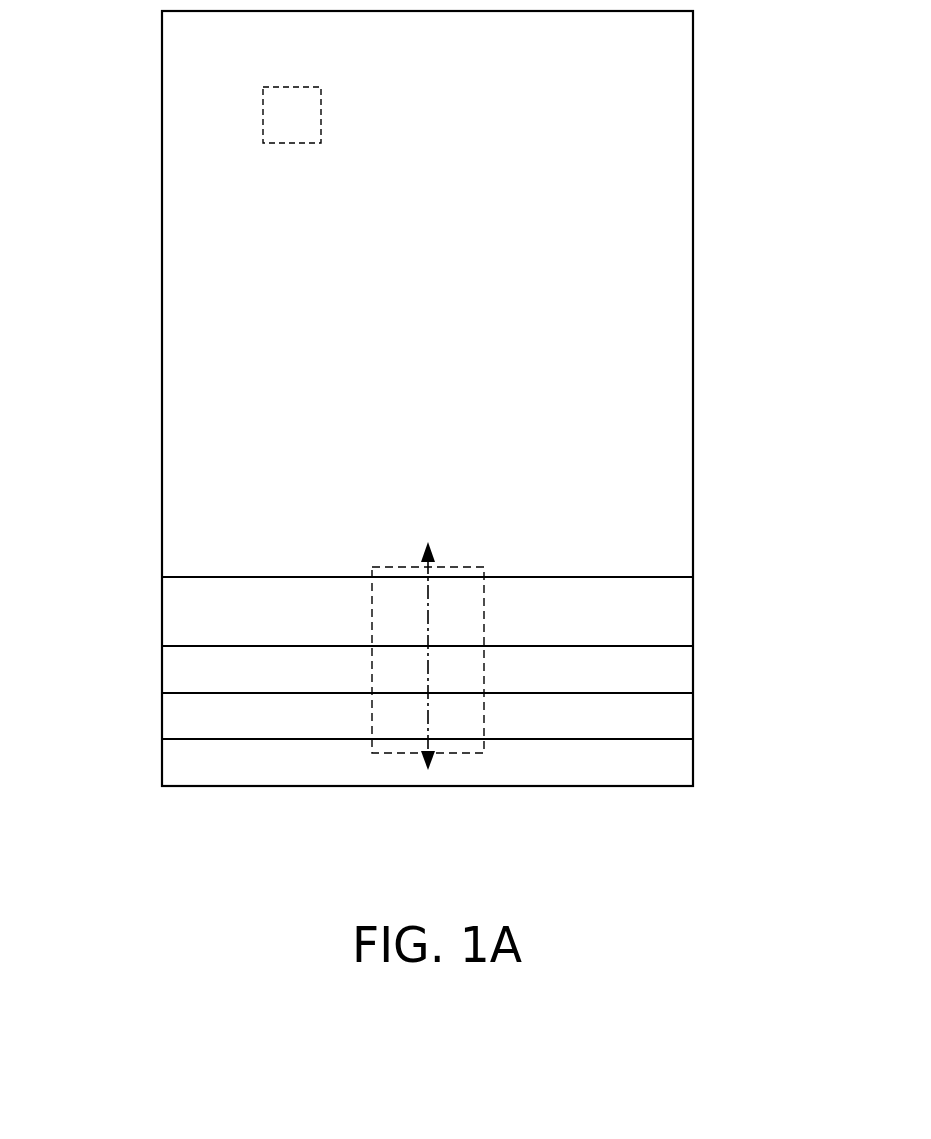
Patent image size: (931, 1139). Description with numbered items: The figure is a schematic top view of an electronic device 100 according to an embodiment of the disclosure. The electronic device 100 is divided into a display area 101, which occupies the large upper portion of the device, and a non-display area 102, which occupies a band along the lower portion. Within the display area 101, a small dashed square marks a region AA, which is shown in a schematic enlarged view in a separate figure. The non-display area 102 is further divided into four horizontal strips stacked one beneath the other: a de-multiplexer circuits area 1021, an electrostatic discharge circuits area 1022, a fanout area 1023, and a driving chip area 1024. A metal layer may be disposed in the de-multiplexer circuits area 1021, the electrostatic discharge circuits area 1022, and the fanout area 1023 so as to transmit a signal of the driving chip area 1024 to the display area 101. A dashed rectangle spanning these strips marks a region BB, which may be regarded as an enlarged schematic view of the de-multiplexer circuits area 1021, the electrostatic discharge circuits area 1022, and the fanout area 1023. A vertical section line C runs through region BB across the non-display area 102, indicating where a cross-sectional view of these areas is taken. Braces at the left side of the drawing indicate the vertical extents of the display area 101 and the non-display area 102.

The electronic device 100 is at (803, 855).
The display area 101 is at (130, 11).
The non-display area 102 is at (130, 577).
The de-multiplexer circuits area 1021 is at (678, 612).
The electrostatic discharge circuits area 1022 is at (678, 672).
The fanout area 1023 is at (678, 722).
The driving chip area 1024 is at (678, 769).
The region AA is at (321, 105).
The region BB is at (484, 602).
The section line C-C' C is at (444, 656).